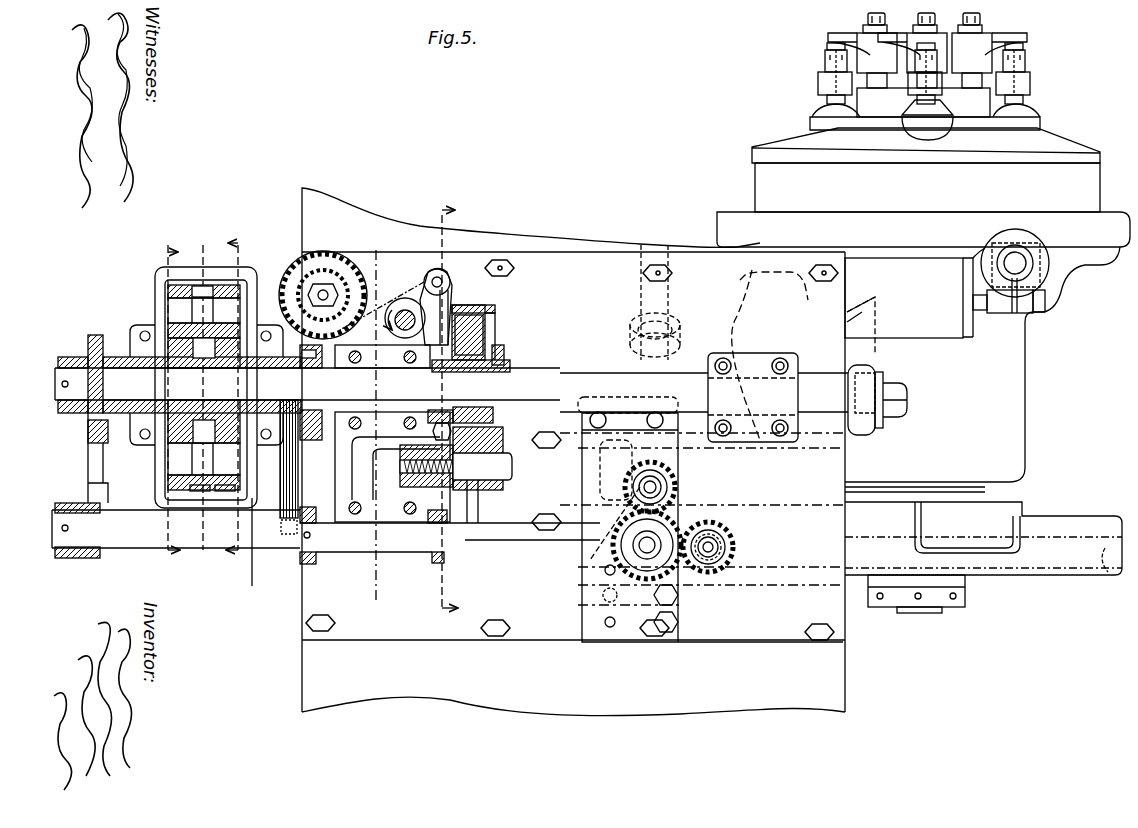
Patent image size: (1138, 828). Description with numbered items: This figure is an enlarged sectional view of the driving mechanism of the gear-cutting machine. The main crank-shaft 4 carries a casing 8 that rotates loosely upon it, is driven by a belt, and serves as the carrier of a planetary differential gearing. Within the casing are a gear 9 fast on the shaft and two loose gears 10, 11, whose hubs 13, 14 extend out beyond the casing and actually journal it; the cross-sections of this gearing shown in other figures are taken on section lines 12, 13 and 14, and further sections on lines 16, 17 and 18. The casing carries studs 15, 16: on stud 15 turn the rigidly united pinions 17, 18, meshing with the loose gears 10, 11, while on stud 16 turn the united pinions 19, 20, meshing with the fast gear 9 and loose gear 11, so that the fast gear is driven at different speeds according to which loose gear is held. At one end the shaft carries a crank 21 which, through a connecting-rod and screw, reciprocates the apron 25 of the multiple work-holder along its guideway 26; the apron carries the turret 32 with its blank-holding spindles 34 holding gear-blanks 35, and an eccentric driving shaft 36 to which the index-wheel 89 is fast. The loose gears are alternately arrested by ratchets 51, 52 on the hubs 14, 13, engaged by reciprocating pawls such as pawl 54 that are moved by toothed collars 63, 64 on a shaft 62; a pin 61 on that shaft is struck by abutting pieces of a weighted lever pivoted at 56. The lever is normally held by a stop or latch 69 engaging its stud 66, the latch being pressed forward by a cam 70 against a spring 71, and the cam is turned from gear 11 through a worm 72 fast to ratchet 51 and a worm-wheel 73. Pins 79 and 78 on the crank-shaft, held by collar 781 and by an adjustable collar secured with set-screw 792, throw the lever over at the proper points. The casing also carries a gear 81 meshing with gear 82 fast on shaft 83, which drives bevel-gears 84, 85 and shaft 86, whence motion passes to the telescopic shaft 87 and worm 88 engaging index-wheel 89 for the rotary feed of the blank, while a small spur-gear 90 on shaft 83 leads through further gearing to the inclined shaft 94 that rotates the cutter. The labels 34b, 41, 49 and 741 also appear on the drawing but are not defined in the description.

The main crank-shaft 4 is at (530, 388).
The casing 8 is at (158, 292).
The gear 9 is at (180, 460).
The gear 10 is at (175, 372).
The gear 11 is at (255, 413).
The section line 12 is at (168, 401).
The hub 13 is at (156, 401).
The hub 14 is at (263, 401).
The stud 15 is at (175, 310).
The stud 16 is at (195, 434).
The pinion 17 is at (373, 410).
The pinion 18 is at (443, 410).
The pinion 19 is at (195, 488).
The pinion 20 is at (232, 490).
The crank 21 is at (862, 386).
The apron 25 is at (1005, 356).
The guideway 26 is at (866, 312).
The turret 32 is at (1040, 178).
The spindles 34 is at (1030, 106).
The terminal opening 34b is at (905, 112).
The gear-blanks 35 is at (818, 85).
The driving spindle 36 is at (905, 613).
The clamp 41 is at (1030, 290).
The bushing 49 is at (1035, 272).
The ratchet 51 is at (322, 370).
The ratchet 52 is at (92, 340).
The reciprocating pawl 54 is at (90, 475).
The pivot 56 is at (472, 492).
The pin 61 is at (472, 520).
The shaft 62 is at (458, 545).
The collar 63 is at (310, 564).
The collar 64 is at (100, 556).
The stud 66 is at (488, 322).
The stop or latch 69 is at (450, 300).
The cam 70 is at (403, 300).
The spring 71 is at (395, 300).
The worm 72 is at (345, 370).
The worm-wheel 73 is at (310, 262).
The pin or arm 78 is at (530, 372).
The pin 79 is at (478, 340).
The gear 81 is at (306, 344).
The gear 82 is at (290, 525).
The shaft 83 is at (395, 490).
The bevel-gear 84 is at (580, 560).
The bevel-gear 85 is at (683, 490).
The shaft 86 is at (660, 480).
The telescopic shaft 87 is at (712, 560).
The worm 88 is at (735, 540).
The index-wheel 89 is at (1030, 555).
The small spur-gear 90 is at (648, 360).
The inclined shaft 94 is at (660, 302).
The base 741 is at (432, 372).
The collar 781 is at (520, 358).
The set-screw 792 is at (428, 440).